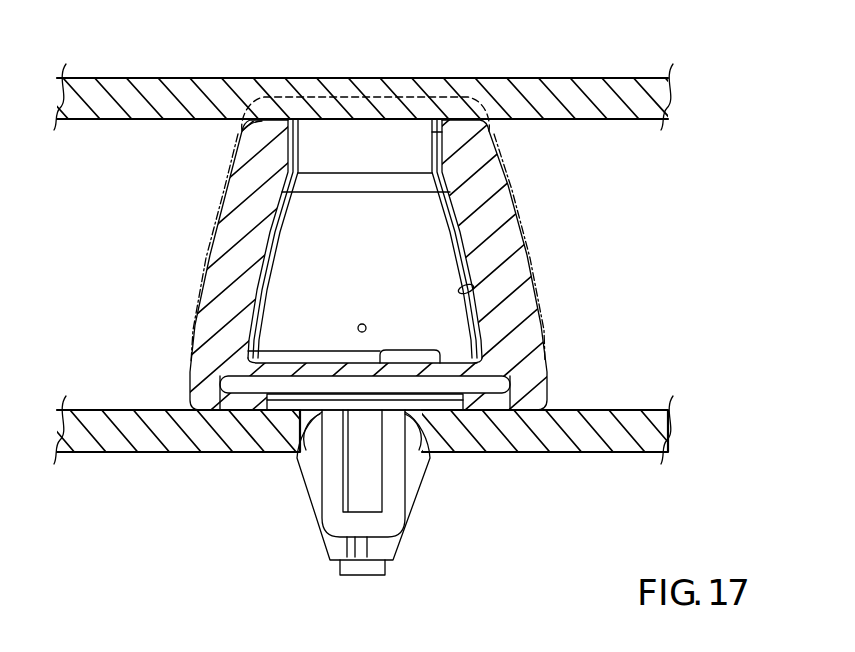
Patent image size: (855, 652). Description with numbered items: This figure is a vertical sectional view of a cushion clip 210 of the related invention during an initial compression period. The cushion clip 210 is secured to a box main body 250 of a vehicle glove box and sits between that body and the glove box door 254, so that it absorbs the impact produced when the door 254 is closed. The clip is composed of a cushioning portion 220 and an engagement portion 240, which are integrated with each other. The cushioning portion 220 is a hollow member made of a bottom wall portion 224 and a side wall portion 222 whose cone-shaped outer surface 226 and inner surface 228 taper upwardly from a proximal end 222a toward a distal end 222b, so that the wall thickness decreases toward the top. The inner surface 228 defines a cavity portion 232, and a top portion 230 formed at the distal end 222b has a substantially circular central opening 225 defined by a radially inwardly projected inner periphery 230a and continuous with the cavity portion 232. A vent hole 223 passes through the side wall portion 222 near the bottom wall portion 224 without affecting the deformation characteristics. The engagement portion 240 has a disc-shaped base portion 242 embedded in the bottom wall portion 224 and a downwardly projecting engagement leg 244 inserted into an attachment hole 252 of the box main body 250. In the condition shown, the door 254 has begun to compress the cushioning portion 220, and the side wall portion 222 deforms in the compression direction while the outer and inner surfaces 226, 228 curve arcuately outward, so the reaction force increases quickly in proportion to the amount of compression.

The cushion clip 210 is at (369, 287).
The cushioning portion 220 is at (365, 286).
The side wall portion 222 is at (240, 257).
The proximal end 222a is at (217, 362).
The distal end 222b is at (262, 168).
The vent hole 223 is at (357, 328).
The bottom wall portion 224 is at (440, 348).
The central opening 225 is at (362, 143).
The outer surface 226 is at (523, 228).
The inner surface 228 is at (480, 292).
The top portion 230 is at (457, 128).
The inner periphery 230a is at (437, 143).
The cavity portion 232 is at (362, 228).
The engagement portion 240 is at (424, 472).
The base portion 242 is at (470, 384).
The engagement leg 244 is at (403, 520).
The box main body 250 is at (583, 423).
The attachment hole 252 is at (312, 440).
The door 254 is at (563, 100).